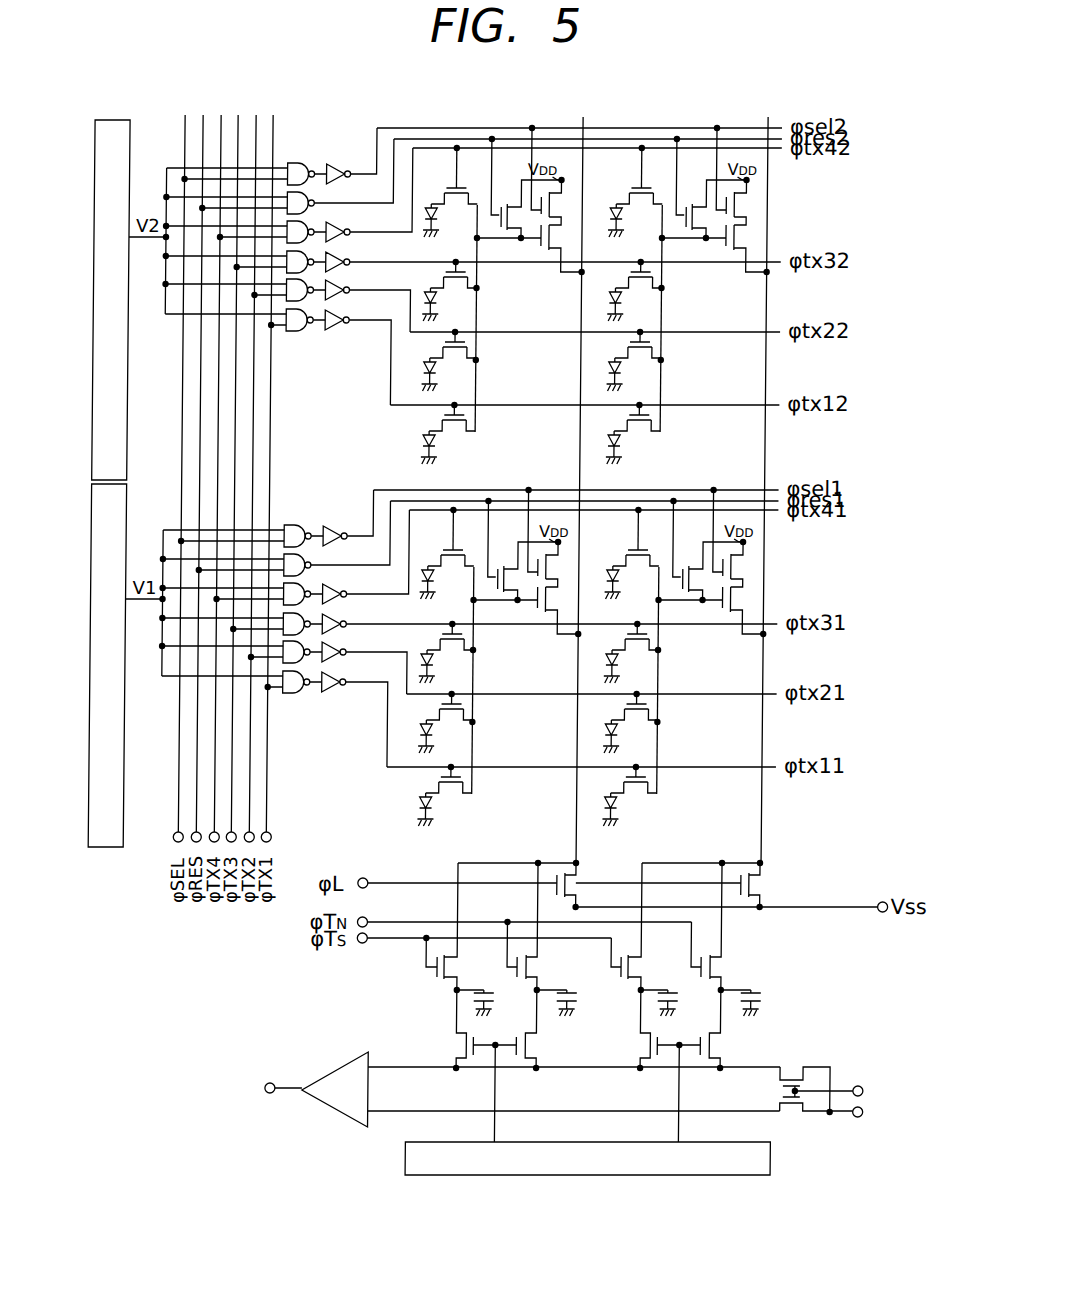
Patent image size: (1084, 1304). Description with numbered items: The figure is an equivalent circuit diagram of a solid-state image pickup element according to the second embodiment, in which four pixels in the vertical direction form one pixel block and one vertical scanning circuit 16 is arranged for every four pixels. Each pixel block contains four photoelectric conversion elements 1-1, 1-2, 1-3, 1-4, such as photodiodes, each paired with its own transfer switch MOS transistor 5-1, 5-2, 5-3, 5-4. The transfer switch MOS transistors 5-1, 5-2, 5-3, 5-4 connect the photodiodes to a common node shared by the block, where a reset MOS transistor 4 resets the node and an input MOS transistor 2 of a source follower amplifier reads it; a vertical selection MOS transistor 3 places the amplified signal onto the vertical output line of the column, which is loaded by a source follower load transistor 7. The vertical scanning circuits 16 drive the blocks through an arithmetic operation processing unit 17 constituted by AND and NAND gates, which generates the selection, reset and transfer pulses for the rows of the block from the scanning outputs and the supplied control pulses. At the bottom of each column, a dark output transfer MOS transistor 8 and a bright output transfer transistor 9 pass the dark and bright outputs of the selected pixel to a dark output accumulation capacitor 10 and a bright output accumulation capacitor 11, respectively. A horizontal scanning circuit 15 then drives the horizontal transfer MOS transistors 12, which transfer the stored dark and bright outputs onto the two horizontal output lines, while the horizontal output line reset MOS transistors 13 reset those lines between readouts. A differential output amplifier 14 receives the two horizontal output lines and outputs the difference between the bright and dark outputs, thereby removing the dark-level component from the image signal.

The photoelectric conversion element 1-1 is at (444, 446).
The photoelectric conversion element 1-2 is at (444, 374).
The photoelectric conversion element 1-3 is at (444, 302).
The photoelectric conversion element 1-4 is at (430, 205).
The transfer switch MOS transistor 5-1 is at (470, 417).
The transfer switch MOS transistor 5-2 is at (470, 344).
The transfer switch MOS transistor 5-3 is at (470, 274).
The transfer switch MOS transistor 5-4 is at (452, 183).
The input MOS transistor of source follower amplifier 2 is at (568, 240).
The vertical selection MOS transistor 3 is at (567, 207).
The reset MOS transistor 4 is at (507, 203).
The source follower load transistor 7 is at (776, 885).
The dark output transfer MOS transistor 8 is at (547, 967).
The bright output transfer transistor 9 is at (436, 969).
The dark output accumulation capacitor 10 is at (585, 1012).
The bright output accumulation capacitor 11 is at (472, 1000).
The horizontal transfer MOS transistor 12 is at (466, 1042).
The horizontal output line reset MOS transistor 13 is at (805, 1076).
The differential output amplifier 14 is at (338, 1102).
The horizontal scanning circuit 15 is at (732, 1178).
The vertical scanning circuit 16 is at (112, 847).
The arithmetic operation processing unit 17 is at (280, 703).